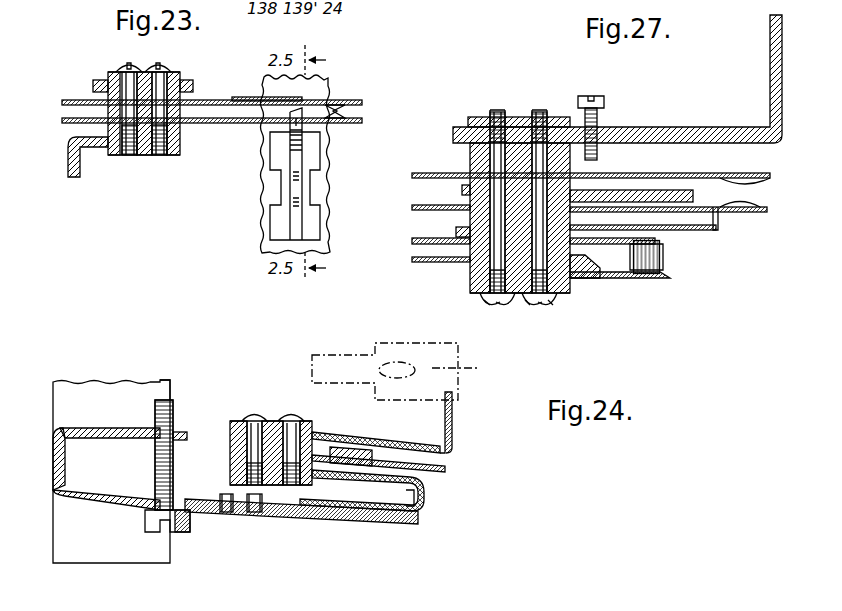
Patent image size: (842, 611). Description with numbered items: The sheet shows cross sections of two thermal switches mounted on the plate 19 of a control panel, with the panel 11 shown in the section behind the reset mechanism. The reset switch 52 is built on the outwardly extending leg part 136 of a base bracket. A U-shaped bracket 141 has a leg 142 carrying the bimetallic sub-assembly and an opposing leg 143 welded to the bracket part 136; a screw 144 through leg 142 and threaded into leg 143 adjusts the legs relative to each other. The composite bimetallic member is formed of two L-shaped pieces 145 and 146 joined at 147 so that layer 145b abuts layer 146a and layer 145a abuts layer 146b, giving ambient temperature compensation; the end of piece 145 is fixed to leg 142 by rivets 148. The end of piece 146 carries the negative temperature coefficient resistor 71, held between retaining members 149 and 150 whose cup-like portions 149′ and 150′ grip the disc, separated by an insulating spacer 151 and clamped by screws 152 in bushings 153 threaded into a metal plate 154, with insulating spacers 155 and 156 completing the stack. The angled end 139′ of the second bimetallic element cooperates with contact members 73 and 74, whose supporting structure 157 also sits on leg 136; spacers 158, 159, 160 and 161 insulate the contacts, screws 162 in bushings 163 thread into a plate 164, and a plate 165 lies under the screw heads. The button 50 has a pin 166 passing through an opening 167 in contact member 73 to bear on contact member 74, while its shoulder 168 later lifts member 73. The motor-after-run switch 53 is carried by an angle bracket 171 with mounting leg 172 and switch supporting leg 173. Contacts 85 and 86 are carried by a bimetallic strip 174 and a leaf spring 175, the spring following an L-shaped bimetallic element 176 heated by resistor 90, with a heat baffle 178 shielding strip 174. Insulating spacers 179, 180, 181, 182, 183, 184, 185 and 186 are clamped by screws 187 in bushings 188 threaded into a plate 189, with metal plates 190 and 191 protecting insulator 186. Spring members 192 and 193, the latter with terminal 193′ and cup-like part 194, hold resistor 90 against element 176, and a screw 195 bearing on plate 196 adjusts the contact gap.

In FIG. 23, the housing top 11 is at (315, 92).
In FIG. 23, the plate 19 is at (318, 248).
In FIG. 23, the button 50 is at (295, 228).
In FIG. 23, the reset switch 52 is at (82, 87).
In FIG. 24, the reset switch 52 is at (336, 570).
In FIG. 27, the motor-after-run switch 53 is at (520, 108).
In FIG. 24, the negative temperature coefficient resistor 71 is at (388, 452).
In FIG. 23, the contact member 73 is at (362, 122).
In FIG. 24, the contact member 73 is at (408, 371).
In FIG. 23, the contact member 74 is at (350, 103).
In FIG. 27, the contact 85 is at (765, 180).
In FIG. 27, the contact 86 is at (760, 205).
In FIG. 27, the negative temperature coefficient resistor 90 is at (663, 260).
In FIG. 24, the outwardly extending leg part 136 is at (105, 563).
In FIG. 24, the angled end 139′ is at (455, 415).
In FIG. 24, the U-shaped bracket 141 is at (55, 485).
In FIG. 24, the leg 142 is at (95, 498).
In FIG. 24, the opposing leg 143 is at (103, 428).
In FIG. 24, the screw 144 is at (155, 455).
In FIG. 24, the L-shaped piece 145 is at (348, 526).
In FIG. 24, the layer 145a is at (415, 526).
In FIG. 24, the layer 145b is at (330, 516).
In FIG. 24, the L-shaped piece 146 is at (392, 490).
In FIG. 24, the layer 146a is at (398, 524).
In FIG. 24, the layer 146b is at (422, 487).
In FIG. 24, the joint 147 is at (420, 508).
In FIG. 24, the rivets 148 is at (253, 514).
In FIG. 24, the retaining member 149 is at (232, 472).
In FIG. 24, the cup-like portion 149′ is at (395, 466).
In FIG. 24, the retaining member 150 is at (232, 443).
In FIG. 24, the cup-like portion 150′ is at (376, 444).
In FIG. 24, the insulating spacer 151 is at (232, 453).
In FIG. 24, the screws 152 is at (288, 416).
In FIG. 24, the bushings 153 is at (243, 420).
In FIG. 24, the metal plate 154 is at (350, 470).
In FIG. 24, the insulating spacer 155 is at (306, 496).
In FIG. 24, the insulating spacer 156 is at (232, 433).
In FIG. 23, the supporting structure 157 is at (68, 160).
In FIG. 23, the insulating spacer 158 is at (182, 130).
In FIG. 23, the insulating spacer 159 is at (75, 103).
In FIG. 23, the insulating spacer 160 is at (193, 88).
In FIG. 23, the insulating spacer 161 is at (184, 82).
In FIG. 23, the screws 162 is at (154, 66).
In FIG. 23, the insulating bushings 163 is at (182, 143).
In FIG. 23, the plate 164 is at (120, 157).
In FIG. 23, the plate 165 is at (172, 78).
In FIG. 23, the pin 166 is at (288, 99).
In FIG. 23, the opening 167 is at (285, 125).
In FIG. 24, the opening 167 is at (396, 362).
In FIG. 23, the shoulder 168 is at (302, 150).
In FIG. 27, the angle bracket 171 is at (727, 125).
In FIG. 27, the mounting leg 172 is at (772, 52).
In FIG. 27, the switch supporting leg 173 is at (640, 127).
In FIG. 27, the bimetallic strip 174 is at (703, 172).
In FIG. 27, the leaf spring 175 is at (716, 222).
In FIG. 27, the L-shaped bimetallic element 176 is at (713, 230).
In FIG. 27, the heat baffle 178 is at (672, 193).
In FIG. 27, the insulating spacer 179 is at (455, 135).
In FIG. 27, the insulating spacer 180 is at (470, 152).
In FIG. 27, the insulating spacer 181 is at (470, 176).
In FIG. 27, the insulating spacer 182 is at (462, 190).
In FIG. 27, the insulating spacer 183 is at (470, 208).
In FIG. 27, the insulating spacer 184 is at (456, 230).
In FIG. 27, the insulating spacer 185 is at (470, 242).
In FIG. 27, the insulator 186 is at (470, 262).
In FIG. 27, the screws 187 is at (497, 303).
In FIG. 27, the insulating bushings 188 is at (485, 302).
In FIG. 27, the plate 189 is at (555, 117).
In FIG. 27, the metal plate 190 is at (478, 285).
In FIG. 27, the metal plate 191 is at (518, 300).
In FIG. 27, the spring member 192 is at (656, 243).
In FIG. 27, the spring member 193 is at (580, 275).
In FIG. 27, the terminal 193′ is at (412, 262).
In FIG. 27, the cup-like part 194 is at (660, 280).
In FIG. 27, the screw 195 is at (600, 112).
In FIG. 27, the plate 196 is at (605, 162).